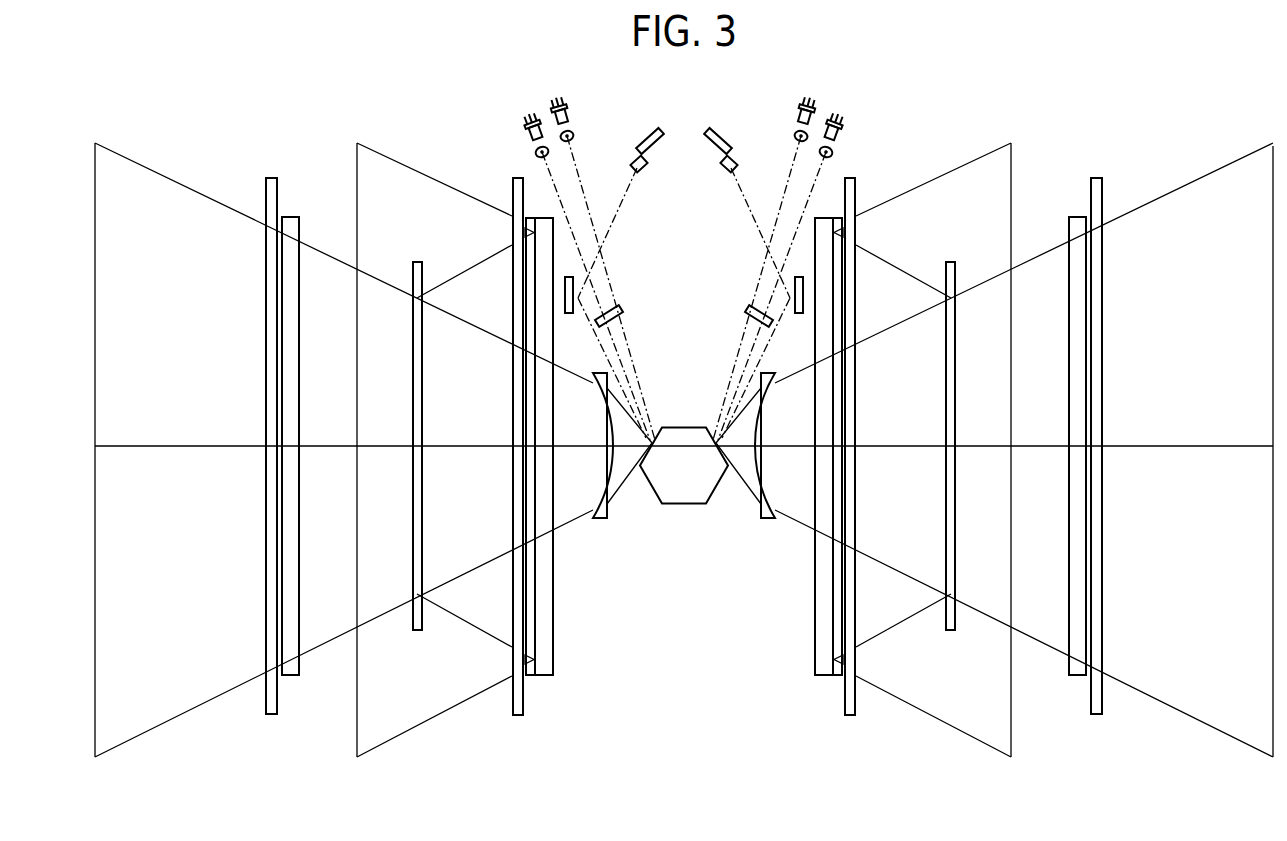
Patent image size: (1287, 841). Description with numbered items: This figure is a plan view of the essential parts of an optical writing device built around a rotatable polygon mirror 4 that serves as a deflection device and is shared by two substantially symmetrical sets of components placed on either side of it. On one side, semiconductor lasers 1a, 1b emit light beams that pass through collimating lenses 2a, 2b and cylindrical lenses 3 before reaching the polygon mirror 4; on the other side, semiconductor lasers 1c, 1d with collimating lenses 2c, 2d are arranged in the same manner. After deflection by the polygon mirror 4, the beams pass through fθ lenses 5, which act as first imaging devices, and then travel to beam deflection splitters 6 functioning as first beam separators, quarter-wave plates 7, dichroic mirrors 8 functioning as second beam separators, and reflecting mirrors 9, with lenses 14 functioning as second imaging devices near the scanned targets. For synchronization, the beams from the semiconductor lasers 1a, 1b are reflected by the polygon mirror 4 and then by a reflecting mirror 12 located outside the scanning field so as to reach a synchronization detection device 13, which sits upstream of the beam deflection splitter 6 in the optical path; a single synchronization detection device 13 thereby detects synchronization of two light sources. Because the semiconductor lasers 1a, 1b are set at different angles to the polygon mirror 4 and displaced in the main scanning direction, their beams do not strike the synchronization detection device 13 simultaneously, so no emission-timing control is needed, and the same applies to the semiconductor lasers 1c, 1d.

The semiconductor laser 1a is at (572, 110).
The semiconductor laser 1b is at (524, 131).
The semiconductor laser 1c is at (794, 110).
The semiconductor laser 1d is at (845, 130).
The collimating lens 2a is at (575, 137).
The collimating lens 2b is at (535, 156).
The collimating lens 2c is at (793, 137).
The collimating lens 2d is at (833, 157).
The cylindrical lens 3 is at (624, 310).
The polygon mirror 4 is at (683, 504).
The fθ lens 5 is at (603, 519).
The beam deflection splitter 6 is at (554, 664).
The quarter-wave plate 7 is at (531, 676).
The dichroic mirror 8 is at (418, 631).
The reflecting mirror 9 is at (290, 676).
The reflecting mirror 12 is at (569, 314).
The synchronization detection device 13 is at (658, 134).
The lens 14 is at (271, 715).